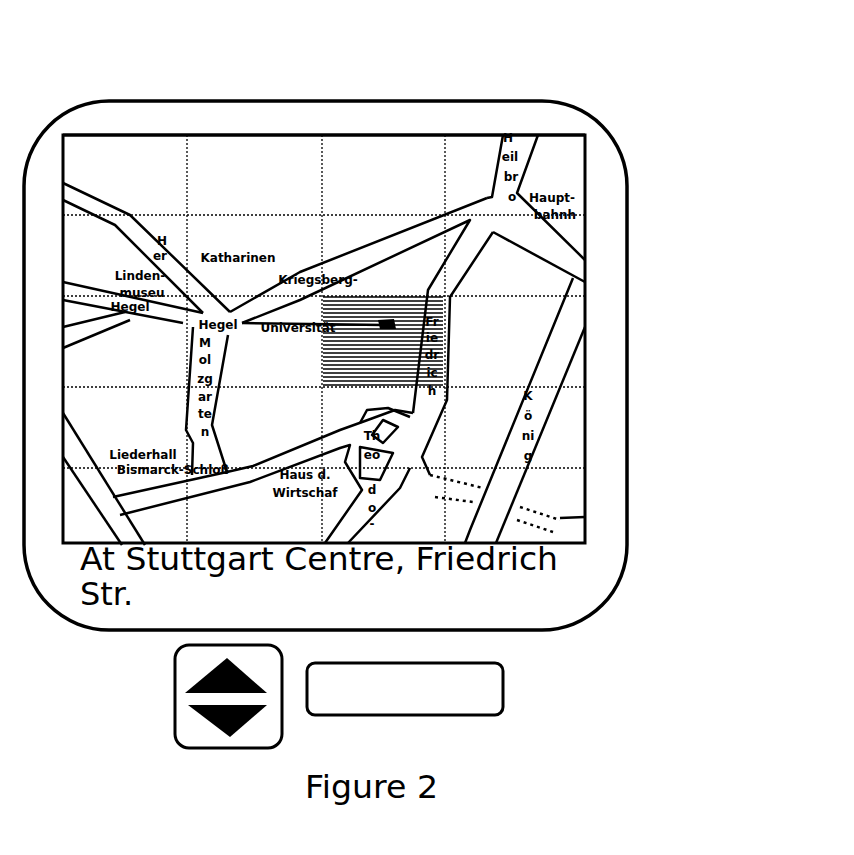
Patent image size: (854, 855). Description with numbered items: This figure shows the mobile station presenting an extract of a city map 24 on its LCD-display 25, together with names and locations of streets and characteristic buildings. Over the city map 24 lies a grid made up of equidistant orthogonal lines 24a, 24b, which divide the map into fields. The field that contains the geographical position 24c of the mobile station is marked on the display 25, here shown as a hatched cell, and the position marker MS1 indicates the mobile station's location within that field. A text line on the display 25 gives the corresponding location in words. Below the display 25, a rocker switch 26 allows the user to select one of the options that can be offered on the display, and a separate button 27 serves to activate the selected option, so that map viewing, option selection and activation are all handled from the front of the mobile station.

The city map 24 is at (135, 118).
The orthogonal grid lines 24a is at (267, 136).
The orthogonal grid lines 24b is at (325, 170).
The geographical position of the mobile station 24c is at (400, 296).
The display 25 is at (62, 122).
The rocker switch 26 is at (172, 693).
The button 27 is at (443, 718).
The mobile station position marker MS1 is at (383, 324).